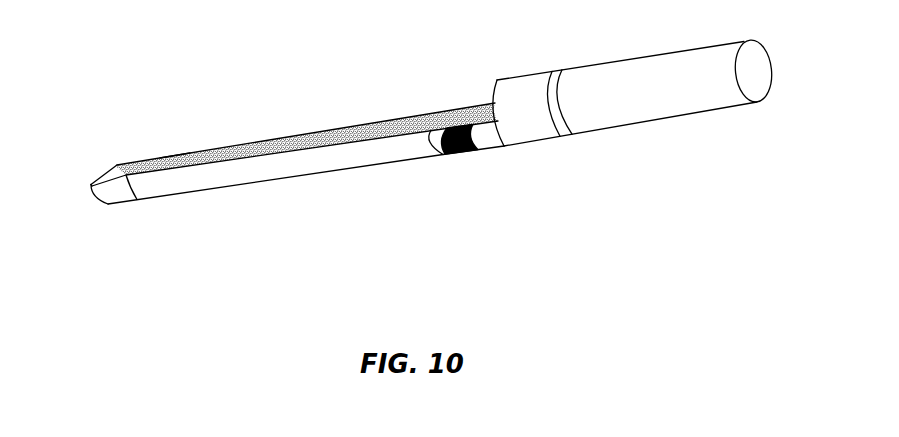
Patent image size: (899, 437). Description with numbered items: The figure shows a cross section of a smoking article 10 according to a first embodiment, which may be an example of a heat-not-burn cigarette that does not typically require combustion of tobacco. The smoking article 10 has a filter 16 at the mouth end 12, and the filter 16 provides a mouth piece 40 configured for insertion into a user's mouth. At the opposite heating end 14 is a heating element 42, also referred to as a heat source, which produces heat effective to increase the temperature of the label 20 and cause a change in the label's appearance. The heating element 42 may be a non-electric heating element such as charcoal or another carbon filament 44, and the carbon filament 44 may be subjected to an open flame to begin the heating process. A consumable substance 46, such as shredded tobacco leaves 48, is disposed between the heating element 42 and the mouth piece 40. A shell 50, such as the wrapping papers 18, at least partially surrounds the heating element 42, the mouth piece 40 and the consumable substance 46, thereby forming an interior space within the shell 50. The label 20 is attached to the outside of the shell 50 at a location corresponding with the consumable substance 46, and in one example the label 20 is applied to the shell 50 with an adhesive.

The smoking article 10 is at (243, 243).
The mouth end 12 is at (755, 72).
The heating end 14 is at (100, 198).
The filter 16 is at (678, 98).
The wrapping papers 18 is at (272, 183).
The label 20 is at (472, 150).
The mouth piece 40 is at (723, 88).
The heating element 42 is at (110, 197).
The carbon filament 44 is at (118, 168).
The consumable substance 46 is at (323, 132).
The shredded tobacco leaves 48 is at (258, 150).
The shell 50 is at (175, 155).